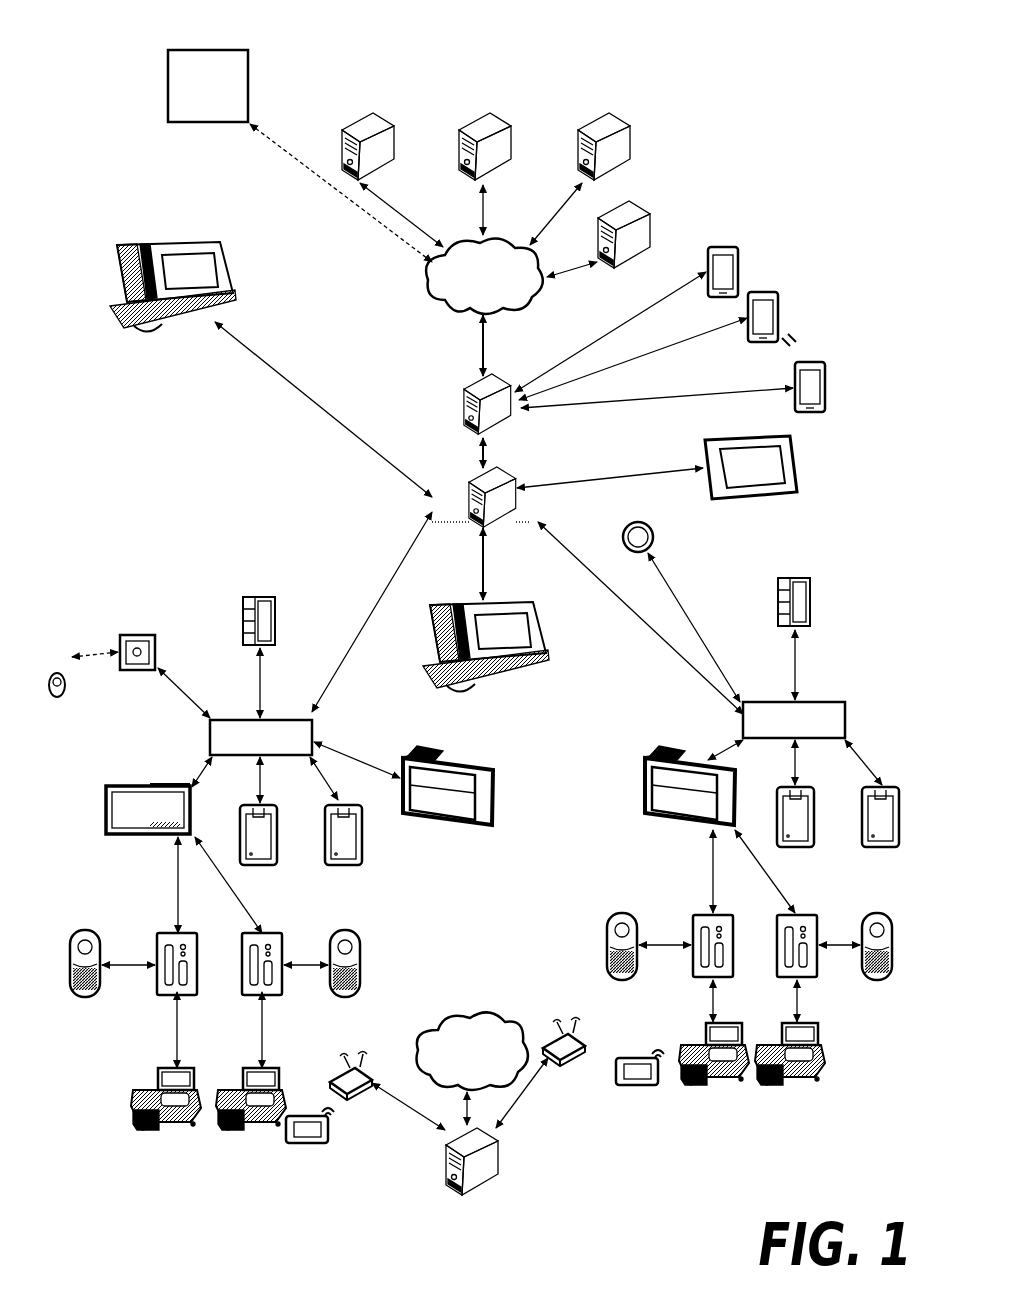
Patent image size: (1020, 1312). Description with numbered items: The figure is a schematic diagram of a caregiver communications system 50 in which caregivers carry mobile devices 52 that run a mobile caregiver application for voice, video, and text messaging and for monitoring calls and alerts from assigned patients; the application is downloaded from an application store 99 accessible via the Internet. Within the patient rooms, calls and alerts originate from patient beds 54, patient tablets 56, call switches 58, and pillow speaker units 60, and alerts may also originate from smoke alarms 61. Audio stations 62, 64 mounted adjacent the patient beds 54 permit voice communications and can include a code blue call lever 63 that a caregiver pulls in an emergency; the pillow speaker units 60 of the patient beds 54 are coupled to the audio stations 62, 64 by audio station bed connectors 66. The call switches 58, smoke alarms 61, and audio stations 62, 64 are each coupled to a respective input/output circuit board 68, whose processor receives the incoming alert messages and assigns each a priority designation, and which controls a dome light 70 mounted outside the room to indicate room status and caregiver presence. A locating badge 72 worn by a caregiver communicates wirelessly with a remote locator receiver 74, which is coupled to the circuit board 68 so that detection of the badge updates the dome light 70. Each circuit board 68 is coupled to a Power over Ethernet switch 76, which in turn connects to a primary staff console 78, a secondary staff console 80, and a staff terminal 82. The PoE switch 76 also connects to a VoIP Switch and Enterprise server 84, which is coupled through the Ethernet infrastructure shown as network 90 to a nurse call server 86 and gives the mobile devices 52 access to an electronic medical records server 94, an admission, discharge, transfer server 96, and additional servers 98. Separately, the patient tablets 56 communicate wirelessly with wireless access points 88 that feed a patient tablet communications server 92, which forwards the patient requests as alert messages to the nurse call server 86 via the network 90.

The caregiver communications system 50 is at (792, 70).
The mobile devices 52 is at (722, 247).
The patient beds 54 is at (143, 1150).
The patient tablets 56 is at (330, 1132).
The call switches 58 is at (250, 808).
The pillow speaker units 60 is at (78, 932).
The smoke alarms 61 is at (602, 536).
The audio station 62 is at (106, 812).
The code blue call lever 63 is at (118, 788).
The audio station 64 is at (422, 828).
The audio station bed connectors (ASBCs) 66 is at (197, 935).
The input/output (I/O) circuit board 68 is at (285, 718).
The dome light 70 is at (243, 627).
The locating badge 72 is at (55, 672).
The remote locator receiver (RLR) 74 is at (130, 636).
The Power over Ethernet (PoE) switch 76 is at (512, 484).
The primary staff console 78 is at (165, 238).
The secondary staff console 80 is at (505, 597).
The staff terminal 82 is at (706, 442).
The VoIP Switch and Enterprise server 84 is at (500, 380).
The nurse call server 86 is at (342, 152).
The wireless access points (WAP) 88 is at (347, 1068).
The network 90 is at (540, 305).
The patient tablet communications server 92 is at (446, 1168).
The electronic medical records (EMR) server 94 is at (510, 142).
The admission, discharge, transfer (ADT) server 96 is at (631, 138).
The additional servers 98 is at (651, 236).
The application store 99 is at (222, 46).